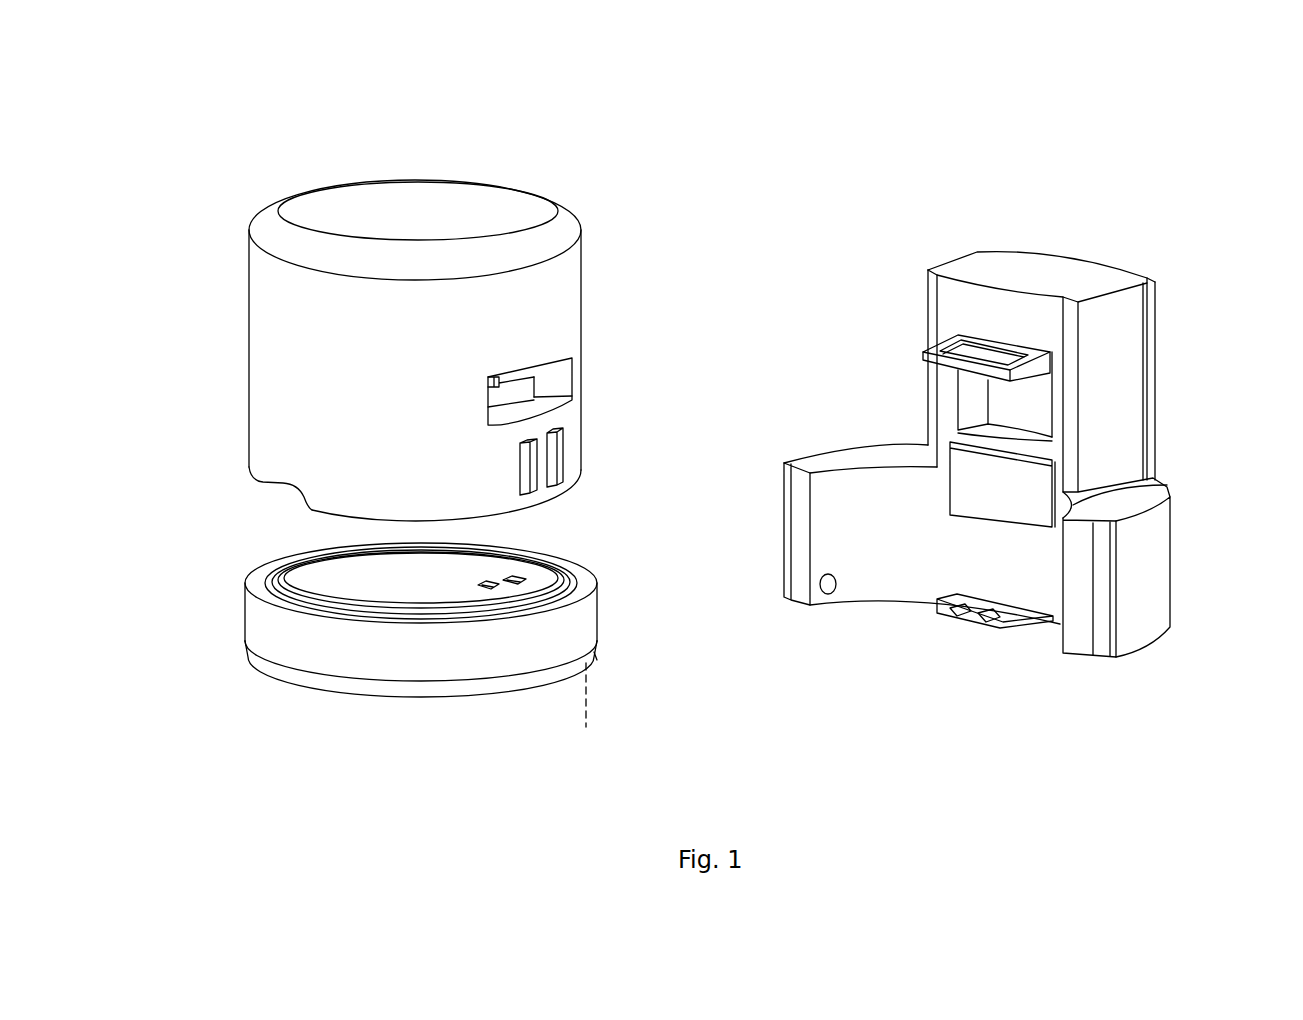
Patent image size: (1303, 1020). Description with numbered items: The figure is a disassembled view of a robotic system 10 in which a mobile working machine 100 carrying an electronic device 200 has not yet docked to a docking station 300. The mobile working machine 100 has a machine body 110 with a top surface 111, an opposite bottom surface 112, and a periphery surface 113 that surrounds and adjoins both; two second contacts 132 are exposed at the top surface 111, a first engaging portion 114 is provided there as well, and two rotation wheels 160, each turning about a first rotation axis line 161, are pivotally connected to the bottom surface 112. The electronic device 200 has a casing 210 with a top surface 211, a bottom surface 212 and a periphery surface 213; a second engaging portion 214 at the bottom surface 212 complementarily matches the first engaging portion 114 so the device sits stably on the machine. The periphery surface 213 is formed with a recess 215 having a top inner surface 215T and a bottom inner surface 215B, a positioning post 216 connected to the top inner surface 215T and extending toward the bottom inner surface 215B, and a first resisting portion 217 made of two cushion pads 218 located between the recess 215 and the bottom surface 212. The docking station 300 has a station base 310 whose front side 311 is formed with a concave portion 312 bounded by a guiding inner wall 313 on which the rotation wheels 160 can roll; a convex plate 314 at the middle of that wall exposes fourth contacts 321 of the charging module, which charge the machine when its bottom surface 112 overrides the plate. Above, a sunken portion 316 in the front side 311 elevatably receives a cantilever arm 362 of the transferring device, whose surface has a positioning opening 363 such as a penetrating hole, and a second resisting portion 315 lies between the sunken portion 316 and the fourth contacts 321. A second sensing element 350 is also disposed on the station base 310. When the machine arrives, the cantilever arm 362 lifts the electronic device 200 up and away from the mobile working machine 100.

The robotic system 10 is at (176, 92).
The mobile working machine 100 is at (422, 715).
The machine body 110 is at (150, 530).
The top surface 111 is at (280, 568).
The bottom surface 112 is at (283, 683).
The periphery surface 113 is at (256, 618).
The first engaging portion 114 is at (537, 570).
The second contacts 132 is at (510, 586).
The rotation wheels 160 is at (588, 660).
The first rotation axis line 161 is at (586, 727).
The electronic device 200 is at (513, 190).
The casing 210 is at (150, 194).
The top surface 211 is at (302, 208).
The bottom surface 212 is at (265, 478).
The periphery surface 213 is at (265, 350).
The second engaging portion 214 is at (543, 500).
The recess 215 is at (560, 396).
The top inner surface 215T is at (542, 375).
The bottom inner surface 215B is at (557, 407).
The positioning post 216 is at (558, 382).
The first resisting portion 217 is at (665, 445).
The cushion pads 218 is at (563, 455).
The docking station 300 is at (1127, 265).
The station base 310 is at (1125, 445).
The front side 311 is at (947, 303).
The concave portion 312 is at (885, 615).
The guiding inner wall 313 is at (843, 490).
The convex plate 314 is at (1042, 624).
The second resisting portion 315 is at (1033, 498).
The sunken portion 316 is at (1050, 418).
The fourth contacts 321 is at (970, 619).
The second sensing element 350 is at (828, 594).
The cantilever arm 362 is at (927, 358).
The positioning opening 363 is at (985, 352).